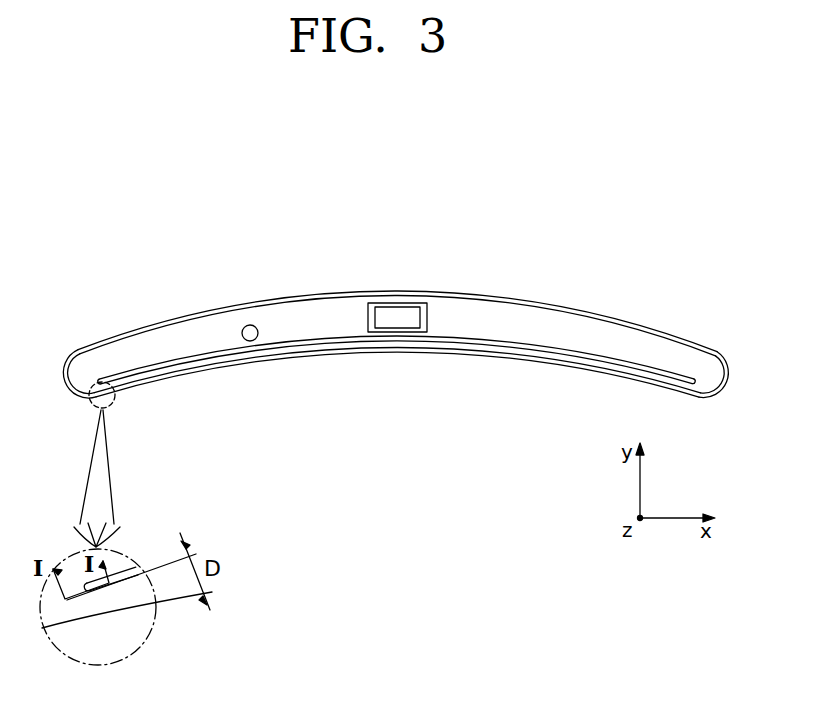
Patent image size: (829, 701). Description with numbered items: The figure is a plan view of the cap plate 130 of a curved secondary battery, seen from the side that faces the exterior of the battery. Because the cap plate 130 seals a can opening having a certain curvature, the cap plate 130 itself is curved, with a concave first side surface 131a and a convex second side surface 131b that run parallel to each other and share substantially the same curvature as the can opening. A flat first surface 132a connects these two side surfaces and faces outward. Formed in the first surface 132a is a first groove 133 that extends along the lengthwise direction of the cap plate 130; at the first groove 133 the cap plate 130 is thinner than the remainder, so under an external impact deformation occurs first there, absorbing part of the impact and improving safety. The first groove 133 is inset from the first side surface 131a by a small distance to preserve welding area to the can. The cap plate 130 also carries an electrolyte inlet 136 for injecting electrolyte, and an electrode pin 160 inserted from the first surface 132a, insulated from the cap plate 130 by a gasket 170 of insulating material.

The cap plate 130 is at (643, 267).
The first side surface 131a is at (141, 384).
The second side surface 131b is at (150, 323).
The first surface 132a is at (698, 368).
The first groove 133 is at (540, 353).
The electrolyte inlet 136 is at (250, 325).
The electrode pin 160 is at (390, 313).
The gasket 170 is at (428, 304).